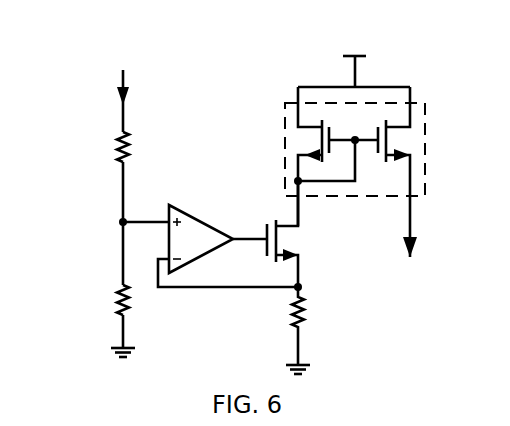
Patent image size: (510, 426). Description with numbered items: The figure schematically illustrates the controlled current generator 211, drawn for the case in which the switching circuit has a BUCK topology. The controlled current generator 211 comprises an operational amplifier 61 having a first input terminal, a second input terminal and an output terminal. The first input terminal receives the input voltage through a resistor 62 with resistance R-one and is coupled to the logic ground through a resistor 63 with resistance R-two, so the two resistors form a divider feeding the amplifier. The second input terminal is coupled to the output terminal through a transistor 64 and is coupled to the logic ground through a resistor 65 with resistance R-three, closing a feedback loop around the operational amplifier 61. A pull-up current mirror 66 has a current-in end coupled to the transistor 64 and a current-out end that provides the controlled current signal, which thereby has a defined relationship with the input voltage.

The controlled current generator 211 is at (227, 49).
The operational amplifier 61 is at (201, 239).
The resistor 62 is at (87, 147).
The resistor 63 is at (88, 301).
The transistor 64 is at (299, 244).
The resistor 65 is at (334, 326).
The pull-up current mirror 66 is at (283, 149).